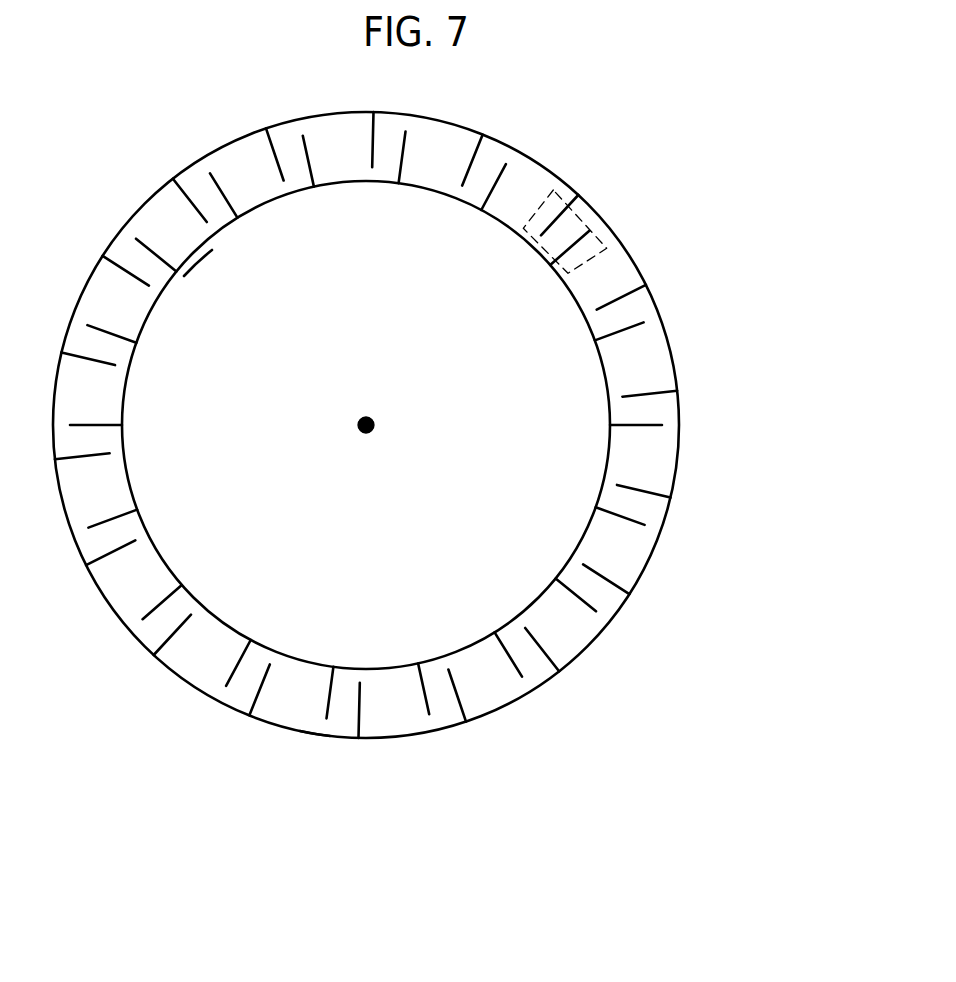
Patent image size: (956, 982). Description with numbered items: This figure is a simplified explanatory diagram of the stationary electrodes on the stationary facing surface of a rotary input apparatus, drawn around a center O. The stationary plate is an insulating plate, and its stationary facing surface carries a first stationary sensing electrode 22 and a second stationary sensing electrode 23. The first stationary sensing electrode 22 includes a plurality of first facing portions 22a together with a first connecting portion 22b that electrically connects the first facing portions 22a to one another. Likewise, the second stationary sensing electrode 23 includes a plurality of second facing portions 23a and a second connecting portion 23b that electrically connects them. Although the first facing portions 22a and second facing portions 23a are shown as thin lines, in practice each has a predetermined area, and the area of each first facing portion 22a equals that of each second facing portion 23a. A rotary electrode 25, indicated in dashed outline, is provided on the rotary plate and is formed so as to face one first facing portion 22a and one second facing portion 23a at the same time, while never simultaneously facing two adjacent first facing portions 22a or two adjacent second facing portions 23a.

The first stationary sensing electrode 22 is at (516, 706).
The first facing portions 22a is at (658, 387).
The first connecting portion 22b is at (311, 736).
The second stationary sensing electrode 23 is at (199, 595).
The second facing portions 23a is at (172, 597).
The second connecting portion 23b is at (198, 258).
The rotary electrode 25 is at (610, 235).
The center O is at (370, 420).